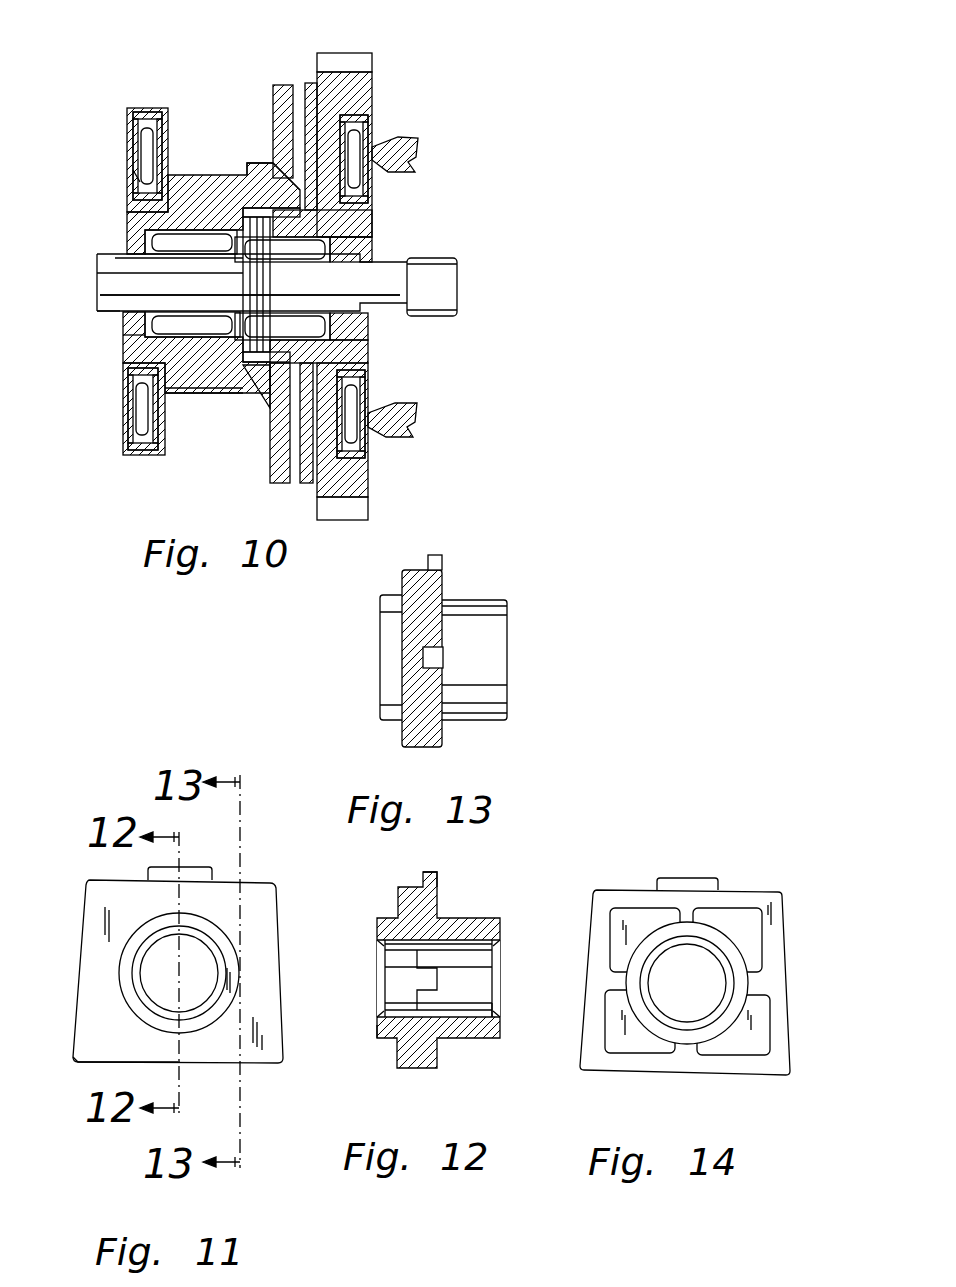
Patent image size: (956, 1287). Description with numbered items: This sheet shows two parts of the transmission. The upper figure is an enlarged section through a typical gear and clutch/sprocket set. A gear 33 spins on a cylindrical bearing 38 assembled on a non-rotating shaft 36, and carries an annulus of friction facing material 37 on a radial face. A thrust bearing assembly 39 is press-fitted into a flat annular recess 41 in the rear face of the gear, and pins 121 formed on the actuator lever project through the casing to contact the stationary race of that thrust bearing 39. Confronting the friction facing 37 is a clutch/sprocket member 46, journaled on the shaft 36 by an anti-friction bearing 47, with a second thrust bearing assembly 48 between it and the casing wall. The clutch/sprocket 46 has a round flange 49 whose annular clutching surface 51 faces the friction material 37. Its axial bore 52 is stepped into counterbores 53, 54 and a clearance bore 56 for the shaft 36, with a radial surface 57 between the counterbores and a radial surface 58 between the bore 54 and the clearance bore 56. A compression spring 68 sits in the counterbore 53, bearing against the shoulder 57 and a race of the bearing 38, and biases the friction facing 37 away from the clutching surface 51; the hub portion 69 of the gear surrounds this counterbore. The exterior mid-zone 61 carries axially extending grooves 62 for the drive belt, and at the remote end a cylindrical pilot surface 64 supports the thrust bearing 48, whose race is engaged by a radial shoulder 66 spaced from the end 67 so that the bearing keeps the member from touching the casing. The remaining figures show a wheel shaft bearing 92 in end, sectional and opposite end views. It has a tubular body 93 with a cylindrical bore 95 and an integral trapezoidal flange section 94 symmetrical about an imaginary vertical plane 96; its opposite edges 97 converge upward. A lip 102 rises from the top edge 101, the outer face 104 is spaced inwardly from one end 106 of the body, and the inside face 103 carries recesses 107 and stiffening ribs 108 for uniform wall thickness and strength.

In FIG. 10, the gear 33 is at (372, 80).
In FIG. 10, the non-rotating shaft 36 is at (118, 312).
In FIG. 10, the friction facing material 37 is at (306, 80).
In FIG. 10, the cylindrical bearing 38 is at (372, 222).
In FIG. 10, the thrust bearing assembly 39 is at (372, 132).
In FIG. 10, the recess 41 is at (368, 387).
In FIG. 10, the clutch/sprocket member 46 is at (125, 407).
In FIG. 10, the anti-friction bearing 47 is at (145, 240).
In FIG. 10, the thrust bearing assembly 48 is at (133, 126).
In FIG. 10, the flange 49 is at (283, 110).
In FIG. 10, the clutching surface 51 is at (297, 90).
In FIG. 10, the axial bore 52 is at (185, 274).
In FIG. 10, the counterbore 53 is at (300, 350).
In FIG. 10, the counterbore 54 is at (190, 296).
In FIG. 10, the clearance bore 56 is at (112, 252).
In FIG. 10, the radial surface 57 is at (245, 205).
In FIG. 10, the radial surface 58 is at (152, 344).
In FIG. 10, the exterior mid-zone 61 is at (218, 400).
In FIG. 10, the grooves 62 is at (200, 400).
In FIG. 10, the pilot surface 64 is at (135, 210).
In FIG. 10, the radial shoulder 66 is at (140, 182).
In FIG. 10, the end 67 is at (130, 336).
In FIG. 10, the compression spring 68 is at (242, 400).
In FIG. 10, the hub portion 69 is at (268, 170).
In FIG. 10, the pins 121 is at (417, 155).
In FIG. 11, the bearing 92 is at (70, 978).
In FIG. 13, the tubular body 93 is at (490, 603).
In FIG. 12, the tubular body 93 is at (485, 918).
In FIG. 11, the trapezoidal flange section 94 is at (105, 896).
In FIG. 12, the cylindrical bore 95 is at (492, 1003).
In FIG. 11, the imaginary vertical plane 96 is at (178, 1082).
In FIG. 11, the edges 97 is at (278, 968).
In FIG. 11, the top edge 101 is at (268, 882).
In FIG. 14, the top edge 101 is at (765, 892).
In FIG. 11, the lip 102 is at (180, 873).
In FIG. 12, the lip 102 is at (437, 872).
In FIG. 14, the lip 102 is at (695, 885).
In FIG. 14, the inside face 103 is at (595, 946).
In FIG. 11, the outer face 104 is at (100, 1042).
In FIG. 12, the end 106 is at (370, 1028).
In FIG. 14, the recesses 107 is at (740, 935).
In FIG. 14, the stiffening ribs 108 is at (680, 917).